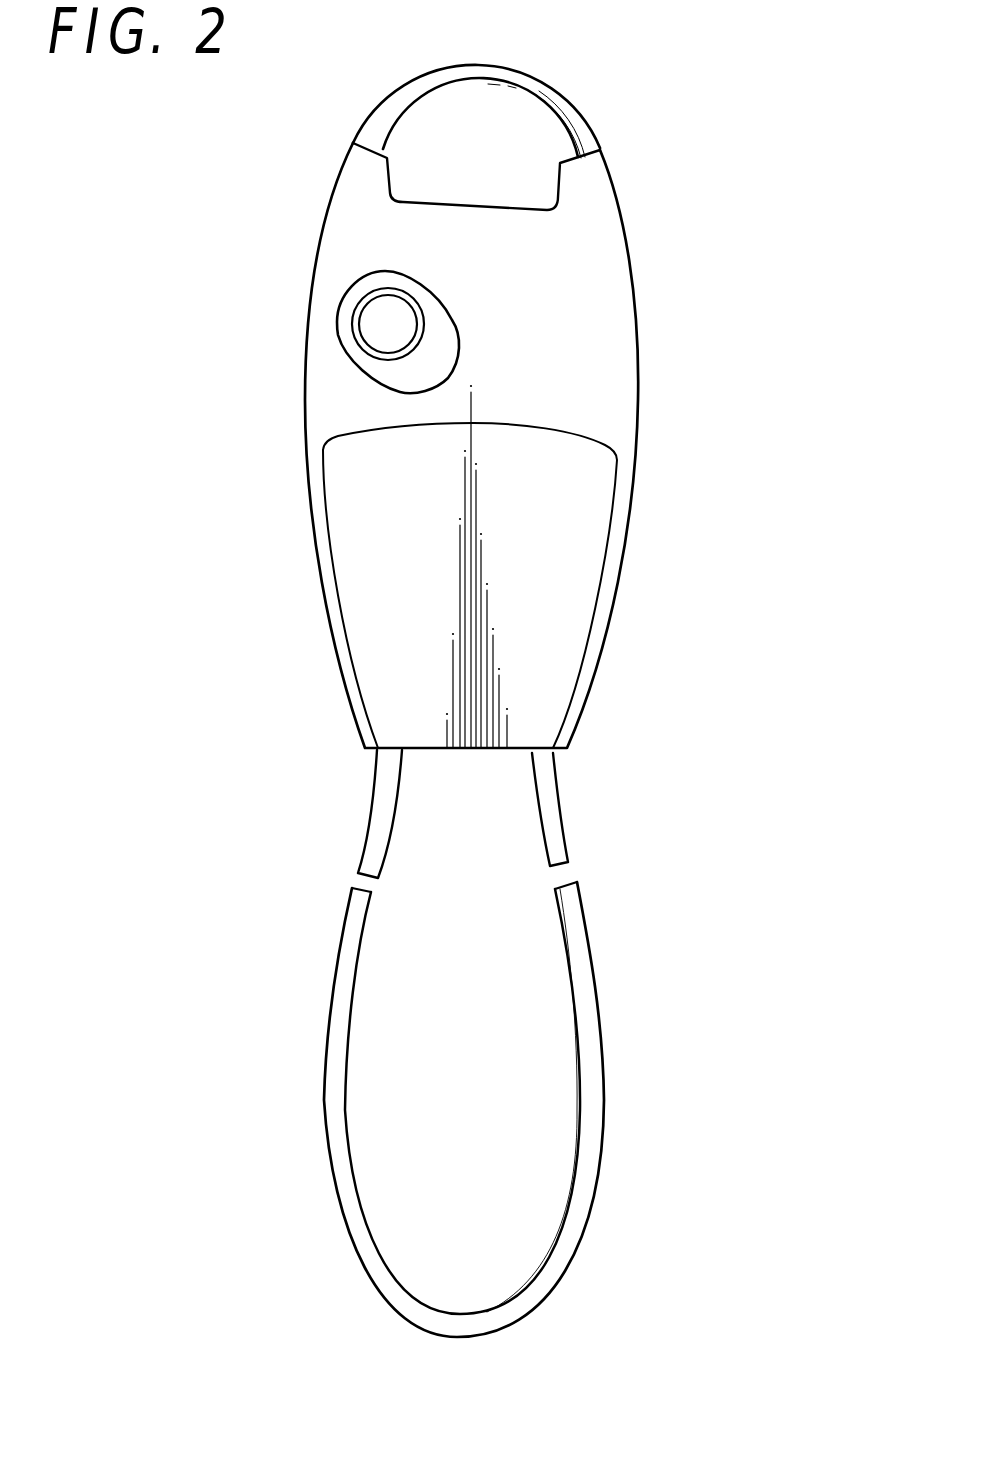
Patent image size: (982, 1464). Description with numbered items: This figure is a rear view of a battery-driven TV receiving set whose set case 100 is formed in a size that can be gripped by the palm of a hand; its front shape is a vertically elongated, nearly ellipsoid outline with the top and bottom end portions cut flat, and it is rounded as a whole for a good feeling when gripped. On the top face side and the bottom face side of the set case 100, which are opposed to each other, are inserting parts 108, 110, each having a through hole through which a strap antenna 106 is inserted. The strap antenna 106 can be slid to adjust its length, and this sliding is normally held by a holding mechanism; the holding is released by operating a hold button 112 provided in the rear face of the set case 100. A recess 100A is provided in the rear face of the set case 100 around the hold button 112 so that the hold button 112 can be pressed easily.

The set case 100 is at (603, 330).
The recess 100A is at (407, 370).
The strap antenna 106 is at (567, 112).
The inserting part 108 is at (622, 433).
The inserting part 110 is at (325, 432).
The hold button 112 is at (377, 323).